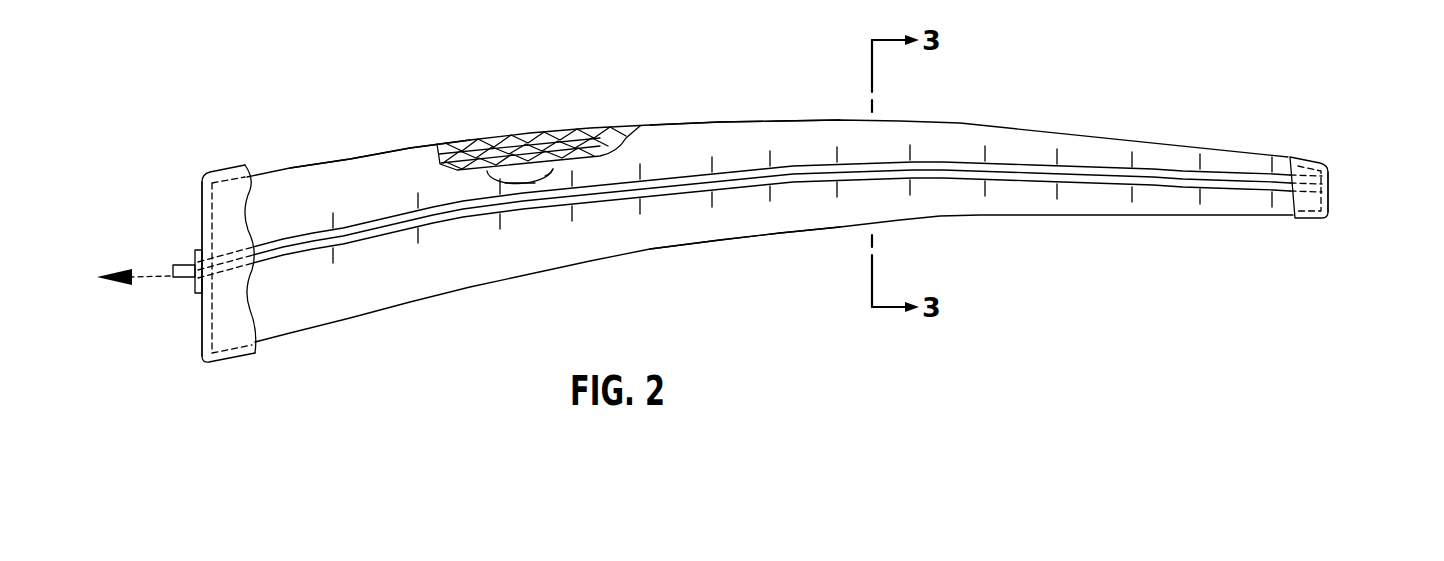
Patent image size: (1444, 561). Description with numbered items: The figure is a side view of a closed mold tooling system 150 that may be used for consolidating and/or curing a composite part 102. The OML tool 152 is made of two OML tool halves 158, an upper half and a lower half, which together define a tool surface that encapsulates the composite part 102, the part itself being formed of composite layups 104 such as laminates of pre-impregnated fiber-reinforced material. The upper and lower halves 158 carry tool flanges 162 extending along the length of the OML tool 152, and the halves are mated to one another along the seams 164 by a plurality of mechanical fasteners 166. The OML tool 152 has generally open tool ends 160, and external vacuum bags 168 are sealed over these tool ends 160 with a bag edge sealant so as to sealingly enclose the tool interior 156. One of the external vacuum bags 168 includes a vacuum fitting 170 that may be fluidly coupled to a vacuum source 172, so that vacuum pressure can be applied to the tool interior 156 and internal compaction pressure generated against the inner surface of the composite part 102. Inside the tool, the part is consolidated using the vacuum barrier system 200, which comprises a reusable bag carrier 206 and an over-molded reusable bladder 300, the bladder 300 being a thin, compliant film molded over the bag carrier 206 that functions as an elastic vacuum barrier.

The closed mold tooling system 150 is at (299, 167).
The tool interior 156 is at (367, 170).
The OML tool 152 is at (452, 147).
The composite layup 104 is at (500, 143).
The composite part 102 is at (548, 147).
The OML tool halves 158 is at (733, 133).
The tool flanges 162 is at (795, 166).
The seams 164 is at (680, 187).
The mechanical fasteners 166 is at (422, 250).
The tool ends 160 is at (278, 340).
The external vacuum bags 168 is at (202, 328).
The vacuum fittings 170 is at (194, 257).
The vacuum source 172 is at (148, 278).
The vacuum barrier system 200 is at (491, 186).
The bladder 300 is at (515, 174).
The reusable bag carrier 206 is at (548, 170).